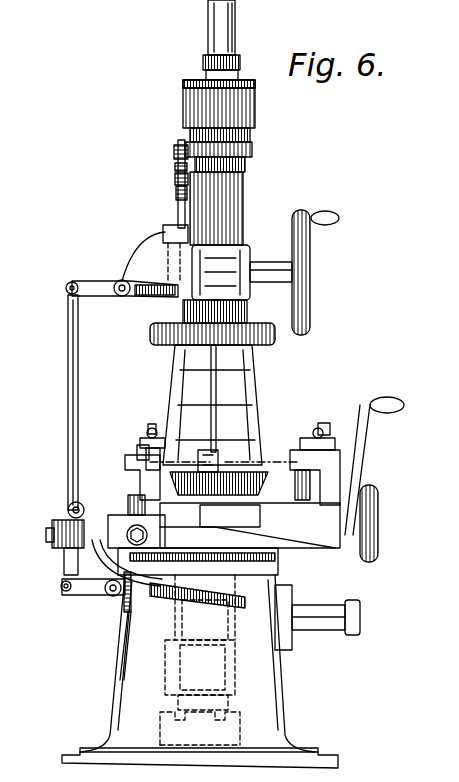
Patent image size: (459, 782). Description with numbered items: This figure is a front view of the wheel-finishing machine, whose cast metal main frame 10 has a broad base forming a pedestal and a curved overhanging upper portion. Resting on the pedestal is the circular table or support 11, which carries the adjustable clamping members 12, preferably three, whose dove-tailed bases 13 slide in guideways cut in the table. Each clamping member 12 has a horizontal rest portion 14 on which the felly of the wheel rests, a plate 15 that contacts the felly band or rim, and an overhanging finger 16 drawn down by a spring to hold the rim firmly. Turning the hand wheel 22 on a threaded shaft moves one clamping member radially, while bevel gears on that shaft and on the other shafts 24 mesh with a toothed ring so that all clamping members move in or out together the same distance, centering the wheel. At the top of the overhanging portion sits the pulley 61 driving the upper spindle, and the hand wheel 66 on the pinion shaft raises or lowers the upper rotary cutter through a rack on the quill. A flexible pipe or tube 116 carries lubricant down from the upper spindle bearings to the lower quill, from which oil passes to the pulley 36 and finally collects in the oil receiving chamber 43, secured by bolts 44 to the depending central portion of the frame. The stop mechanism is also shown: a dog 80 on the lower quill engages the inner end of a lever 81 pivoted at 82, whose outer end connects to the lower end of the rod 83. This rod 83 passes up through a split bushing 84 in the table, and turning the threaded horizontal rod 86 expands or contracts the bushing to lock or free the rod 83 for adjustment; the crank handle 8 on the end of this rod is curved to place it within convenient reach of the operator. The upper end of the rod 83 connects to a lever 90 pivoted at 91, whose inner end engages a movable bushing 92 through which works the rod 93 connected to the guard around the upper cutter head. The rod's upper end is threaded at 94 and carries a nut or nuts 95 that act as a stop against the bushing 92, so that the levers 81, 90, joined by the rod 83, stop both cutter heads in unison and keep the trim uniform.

The lever 8 is at (60, 583).
The main frame 10 is at (246, 398).
The table or support 11 is at (250, 525).
The clamping member 12 is at (140, 468).
The base 13 is at (135, 500).
The horizontal rest portion 14 is at (191, 472).
The plate 15 is at (157, 430).
The finger 16 is at (138, 445).
The hand wheel 22 is at (378, 512).
The shaft 24 is at (136, 531).
The pulley 36 is at (200, 635).
The oil receiving chamber 43 is at (160, 727).
The bolts 44 is at (228, 672).
The pulley 61 is at (152, 328).
The hand wheel 66 is at (306, 270).
The dog 80 is at (165, 590).
The lever 81 is at (126, 605).
The pivot 82 is at (112, 595).
The rod 83 is at (80, 386).
The bushing 84 is at (67, 510).
The horizontal rod 86 is at (52, 530).
The lever 90 is at (100, 270).
The pivot 91 is at (121, 262).
The movable bushing 92 is at (160, 212).
The rod 93 is at (175, 203).
The threaded portion 94 is at (176, 148).
The nut 95 is at (175, 166).
The flexible pipe or tube 116 is at (214, 383).